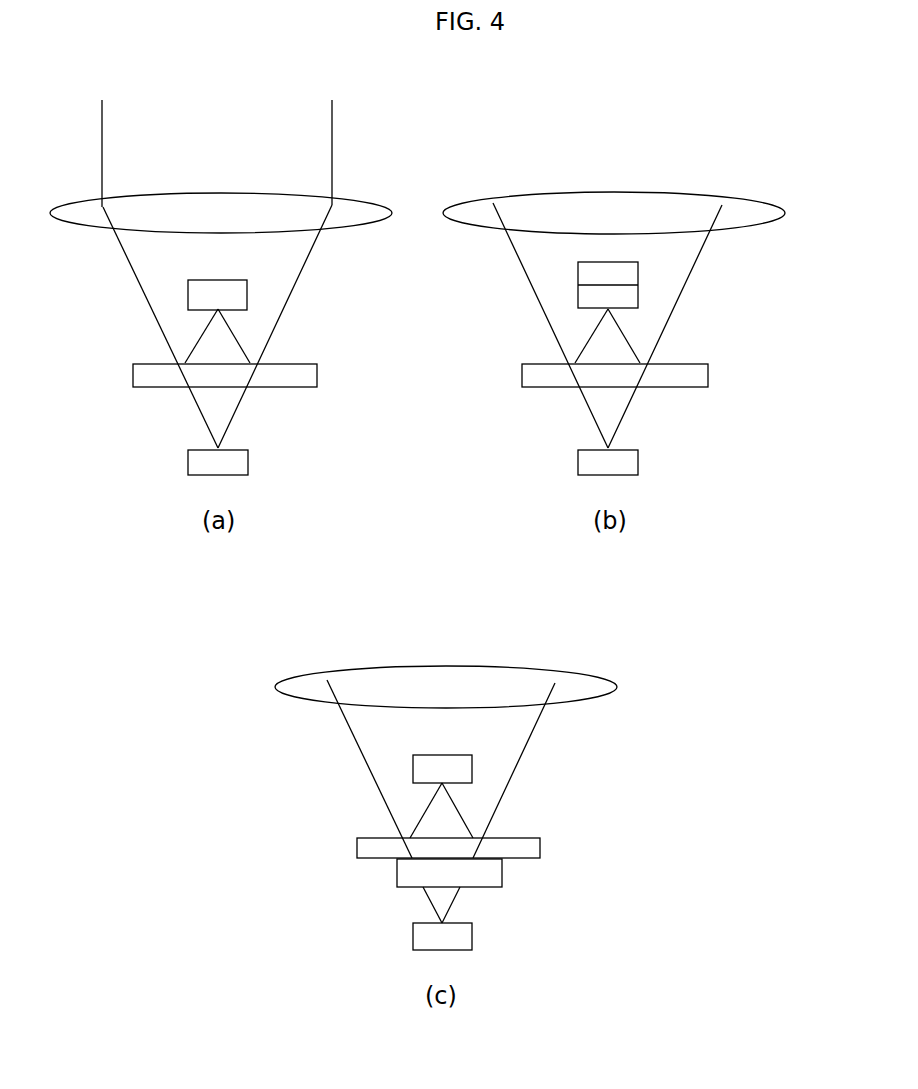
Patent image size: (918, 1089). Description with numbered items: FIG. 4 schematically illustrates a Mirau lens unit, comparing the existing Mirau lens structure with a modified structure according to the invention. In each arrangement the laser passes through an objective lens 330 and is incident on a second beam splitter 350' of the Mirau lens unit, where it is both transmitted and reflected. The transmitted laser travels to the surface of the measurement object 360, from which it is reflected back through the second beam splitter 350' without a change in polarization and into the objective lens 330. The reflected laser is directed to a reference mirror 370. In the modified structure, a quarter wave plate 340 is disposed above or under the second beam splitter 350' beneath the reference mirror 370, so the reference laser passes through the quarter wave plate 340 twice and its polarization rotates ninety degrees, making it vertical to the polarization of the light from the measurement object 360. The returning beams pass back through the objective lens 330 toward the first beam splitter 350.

The objective lens 330 is at (348, 197).
The quarter wave plate 340 is at (638, 293).
The first beam splitter 350 is at (373, 610).
The second beam splitter 350' is at (654, 373).
The measurement object 360 is at (248, 457).
The reference mirror 370 is at (247, 293).